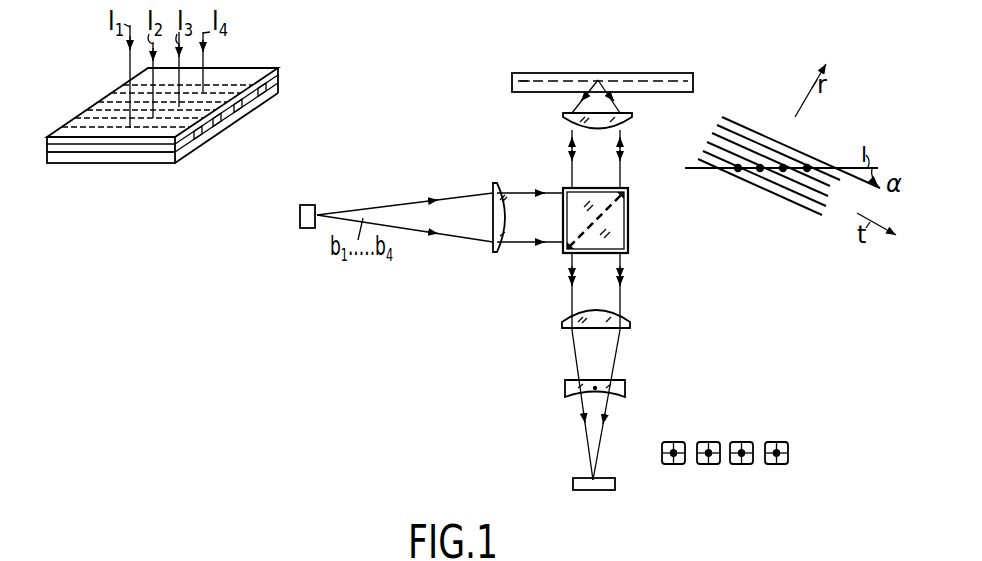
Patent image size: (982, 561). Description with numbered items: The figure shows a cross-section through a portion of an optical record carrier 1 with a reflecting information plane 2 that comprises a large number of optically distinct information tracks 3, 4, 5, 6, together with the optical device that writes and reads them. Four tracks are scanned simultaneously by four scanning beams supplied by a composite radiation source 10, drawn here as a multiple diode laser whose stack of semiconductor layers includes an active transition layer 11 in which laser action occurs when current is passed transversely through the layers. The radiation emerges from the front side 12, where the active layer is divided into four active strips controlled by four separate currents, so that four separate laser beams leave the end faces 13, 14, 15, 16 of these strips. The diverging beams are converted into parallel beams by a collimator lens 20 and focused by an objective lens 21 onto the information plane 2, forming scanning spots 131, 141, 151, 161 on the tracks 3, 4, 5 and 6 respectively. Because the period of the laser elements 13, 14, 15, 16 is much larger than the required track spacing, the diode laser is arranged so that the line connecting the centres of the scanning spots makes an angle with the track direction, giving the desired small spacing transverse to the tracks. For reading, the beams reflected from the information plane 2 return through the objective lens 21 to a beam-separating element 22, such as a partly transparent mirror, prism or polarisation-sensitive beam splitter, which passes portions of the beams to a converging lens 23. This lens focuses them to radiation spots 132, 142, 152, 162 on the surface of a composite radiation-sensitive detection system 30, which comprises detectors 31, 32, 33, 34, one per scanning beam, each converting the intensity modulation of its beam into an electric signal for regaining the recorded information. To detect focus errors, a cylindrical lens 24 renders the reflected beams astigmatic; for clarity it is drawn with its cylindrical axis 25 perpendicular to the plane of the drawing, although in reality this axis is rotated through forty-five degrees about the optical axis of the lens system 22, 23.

The optical record carrier 1 is at (646, 58).
The reflecting information plane 2 is at (668, 73).
The information track 3 is at (822, 214).
The information track 4 is at (770, 181).
The information track 5 is at (779, 177).
The information track 6 is at (831, 183).
The composite radiation source 10 is at (246, 167).
The active transition layer 11 is at (116, 151).
The front side 12 is at (284, 80).
The end face of active strip 13 is at (199, 140).
The end face of active strip 14 is at (219, 125).
The end face of active strip 15 is at (247, 110).
The end face of active strip 16 is at (273, 93).
The collimator lens 20 is at (494, 253).
The objective lens 21 is at (563, 115).
The beam-separating element 22 is at (629, 222).
The converging lens 23 is at (631, 325).
The cylindrical lens 24 is at (626, 387).
The cylindrical axis 25 is at (595, 389).
The composite radiation-sensitive detection system 30 is at (652, 462).
The detector 31 is at (683, 441).
The detector 32 is at (711, 441).
The detector 33 is at (744, 441).
The detector 34 is at (779, 441).
The scanning spot 131 is at (736, 170).
The scanning spot 141 is at (759, 170).
The scanning spot 151 is at (782, 170).
The scanning spot 161 is at (806, 170).
The radiation spot 132 is at (668, 465).
The radiation spot 142 is at (703, 465).
The radiation spot 152 is at (737, 465).
The radiation spot 162 is at (770, 465).